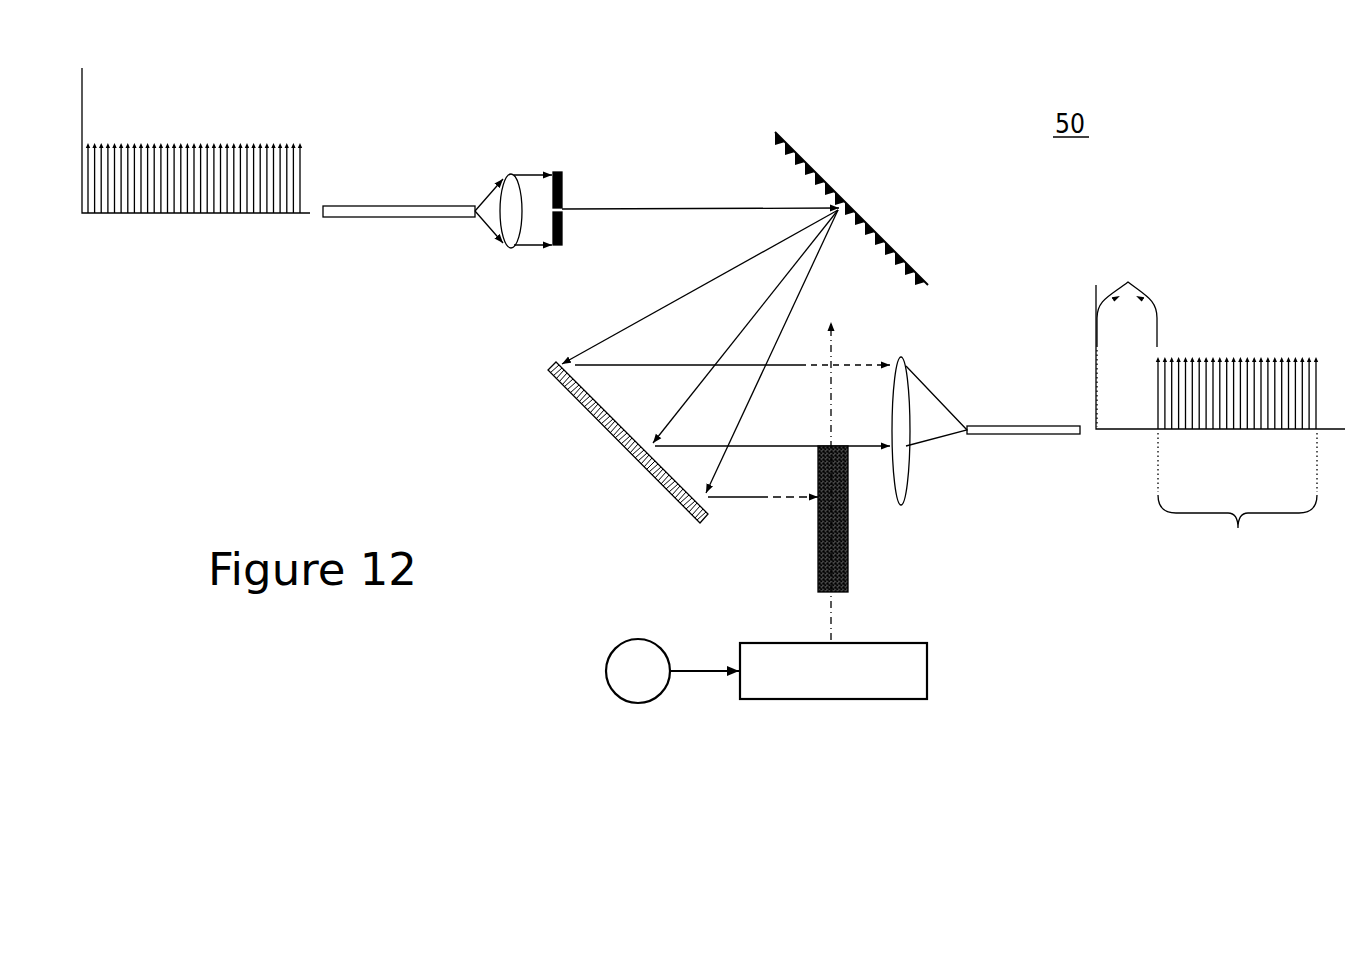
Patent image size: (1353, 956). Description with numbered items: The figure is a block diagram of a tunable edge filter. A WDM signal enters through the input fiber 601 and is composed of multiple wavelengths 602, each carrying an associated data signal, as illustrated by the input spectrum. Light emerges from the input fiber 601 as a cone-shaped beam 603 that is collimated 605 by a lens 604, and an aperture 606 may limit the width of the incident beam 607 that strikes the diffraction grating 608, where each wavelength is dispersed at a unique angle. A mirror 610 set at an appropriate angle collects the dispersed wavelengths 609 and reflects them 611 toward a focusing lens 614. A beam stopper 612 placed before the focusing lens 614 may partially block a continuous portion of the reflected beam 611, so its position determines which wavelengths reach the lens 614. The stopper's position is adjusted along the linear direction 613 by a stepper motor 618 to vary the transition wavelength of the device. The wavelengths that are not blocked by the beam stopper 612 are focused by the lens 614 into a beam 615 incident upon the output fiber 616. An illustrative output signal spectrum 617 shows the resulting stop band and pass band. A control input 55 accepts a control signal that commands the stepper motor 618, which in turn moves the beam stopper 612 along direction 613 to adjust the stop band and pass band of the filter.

The control input 55 is at (606, 669).
The input fiber 601 is at (398, 214).
The multiple wavelengths 602 is at (230, 214).
The cone-shaped beam 603 is at (482, 227).
The lens 604 is at (512, 246).
The collimated beam 605 is at (540, 172).
The aperture 606 is at (565, 228).
The incident beam 607 is at (642, 207).
The diffraction grating 608 is at (797, 154).
The dispersed wavelengths 609 is at (736, 276).
The mirror 610 is at (624, 440).
The reflected beam 611 is at (753, 446).
The beam stopper 612 is at (815, 560).
The linear direction 613 is at (832, 345).
The focusing lens 614 is at (899, 505).
The focused beam 615 is at (932, 393).
The output fiber 616 is at (1024, 434).
The output signal spectrum 617 is at (1240, 345).
The stepper motor 618 is at (928, 670).